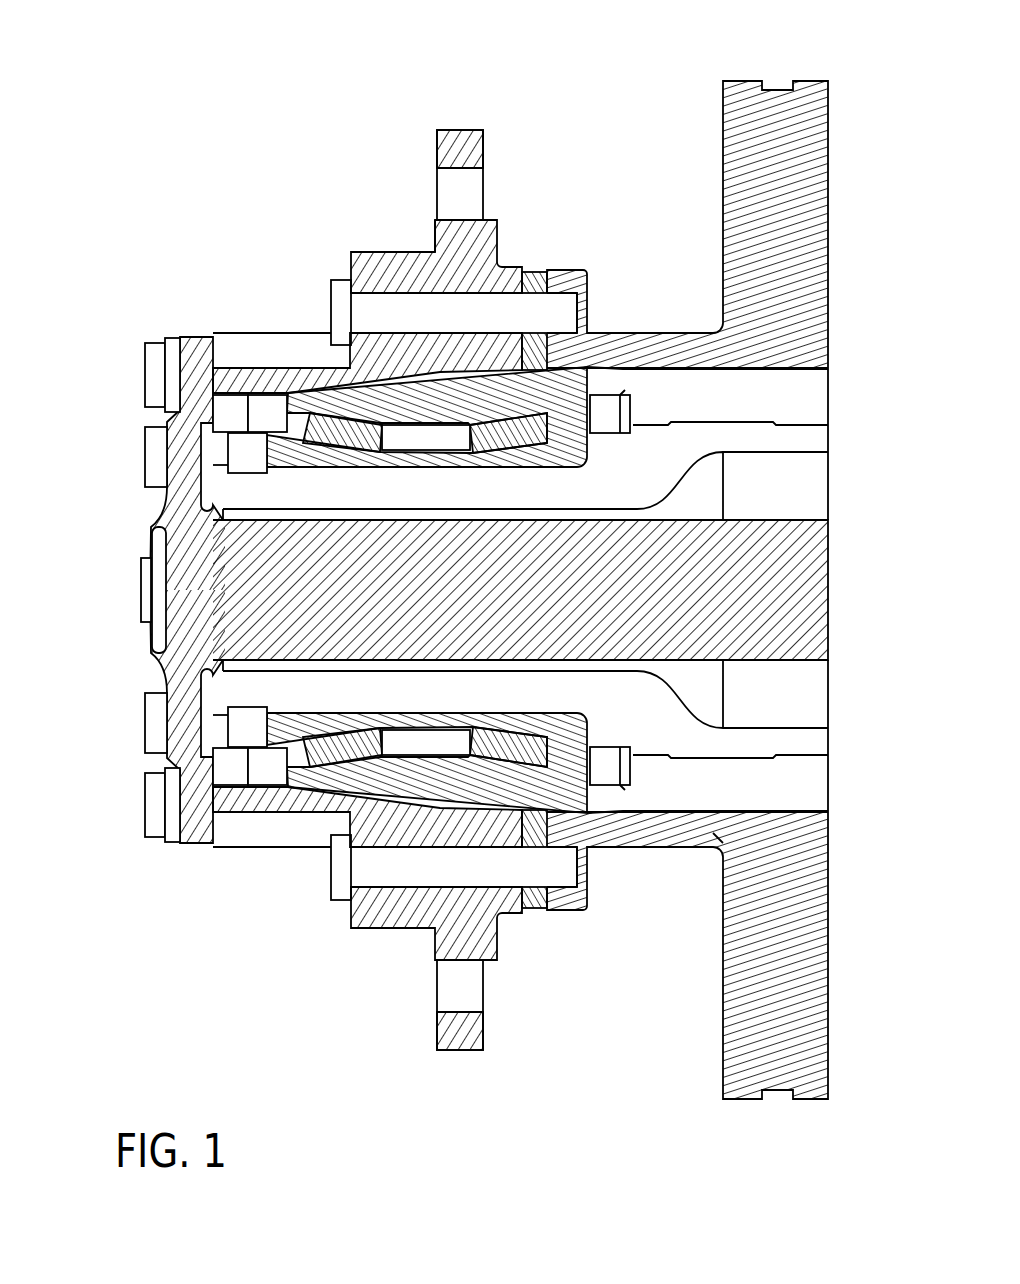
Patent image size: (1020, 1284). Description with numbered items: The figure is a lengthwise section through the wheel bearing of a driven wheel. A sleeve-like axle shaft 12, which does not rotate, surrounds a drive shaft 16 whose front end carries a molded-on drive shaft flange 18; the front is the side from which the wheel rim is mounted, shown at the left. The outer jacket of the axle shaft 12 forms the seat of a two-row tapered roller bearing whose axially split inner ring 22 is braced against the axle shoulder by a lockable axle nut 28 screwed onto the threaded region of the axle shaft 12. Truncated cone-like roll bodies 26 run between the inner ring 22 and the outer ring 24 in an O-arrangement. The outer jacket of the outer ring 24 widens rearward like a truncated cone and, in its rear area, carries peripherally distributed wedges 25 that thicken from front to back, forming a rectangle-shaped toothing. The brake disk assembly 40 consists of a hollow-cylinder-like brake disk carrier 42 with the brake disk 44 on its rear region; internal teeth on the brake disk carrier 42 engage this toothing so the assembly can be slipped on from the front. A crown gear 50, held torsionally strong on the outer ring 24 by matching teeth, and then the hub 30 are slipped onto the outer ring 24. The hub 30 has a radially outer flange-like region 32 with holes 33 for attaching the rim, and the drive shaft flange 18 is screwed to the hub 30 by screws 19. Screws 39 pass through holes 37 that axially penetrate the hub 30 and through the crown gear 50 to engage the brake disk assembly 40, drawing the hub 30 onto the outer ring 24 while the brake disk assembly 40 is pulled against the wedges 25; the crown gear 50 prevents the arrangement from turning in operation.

The axle shaft 12 is at (795, 437).
The drive shaft 16 is at (805, 590).
The drive shaft flange 18 is at (192, 352).
The screws 19 is at (157, 373).
The inner ring 22 is at (247, 770).
The outer ring 24 is at (565, 800).
The wedges 25 is at (582, 362).
The roll bodies 26 is at (296, 405).
The axle nut 28 is at (215, 847).
The hub 30 is at (428, 240).
The flange-like region 32 is at (462, 150).
The holes 33 is at (468, 192).
The holes 37 is at (405, 275).
The screws 39 is at (345, 315).
The brake disk assembly 40 is at (714, 855).
The brake disk carrier 42 is at (667, 352).
The brake disk 44 is at (790, 160).
The crown gear 50 is at (533, 285).